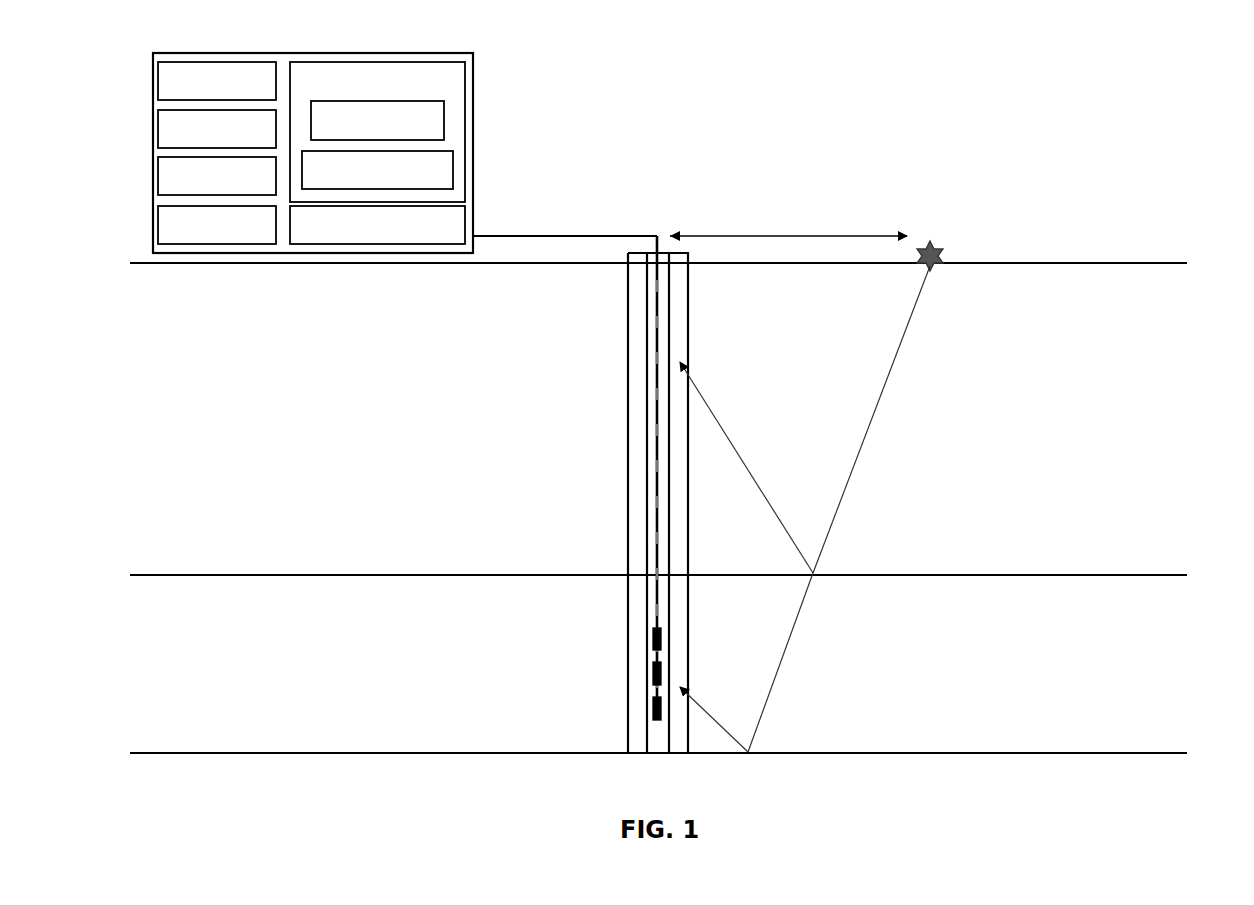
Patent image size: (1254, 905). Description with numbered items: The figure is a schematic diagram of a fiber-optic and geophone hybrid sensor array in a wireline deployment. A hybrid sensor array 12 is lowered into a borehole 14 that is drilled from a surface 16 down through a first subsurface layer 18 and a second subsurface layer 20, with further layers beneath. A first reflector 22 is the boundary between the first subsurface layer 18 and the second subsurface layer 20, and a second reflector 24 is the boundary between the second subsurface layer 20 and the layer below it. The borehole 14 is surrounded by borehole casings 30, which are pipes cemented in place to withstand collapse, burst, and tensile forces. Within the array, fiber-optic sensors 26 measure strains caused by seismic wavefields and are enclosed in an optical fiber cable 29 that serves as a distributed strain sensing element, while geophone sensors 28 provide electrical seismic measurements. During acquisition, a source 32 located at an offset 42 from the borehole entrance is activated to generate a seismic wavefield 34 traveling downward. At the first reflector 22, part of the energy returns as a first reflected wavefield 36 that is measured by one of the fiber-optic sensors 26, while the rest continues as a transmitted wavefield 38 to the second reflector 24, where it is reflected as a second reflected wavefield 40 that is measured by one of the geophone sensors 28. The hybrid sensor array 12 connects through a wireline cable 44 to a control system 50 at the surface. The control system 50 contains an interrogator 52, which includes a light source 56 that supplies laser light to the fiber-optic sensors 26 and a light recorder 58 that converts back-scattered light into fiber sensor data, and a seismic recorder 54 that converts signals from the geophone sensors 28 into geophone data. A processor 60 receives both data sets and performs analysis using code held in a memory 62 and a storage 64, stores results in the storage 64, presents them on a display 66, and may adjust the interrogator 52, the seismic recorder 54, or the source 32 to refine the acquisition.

The hybrid sensor array 12 is at (553, 619).
The borehole 14 is at (650, 335).
The surface 16 is at (1115, 258).
The first subsurface layer 18 is at (1185, 403).
The second subsurface layer 20 is at (1183, 649).
The first reflector 22 is at (1163, 573).
The second reflector 24 is at (1170, 749).
The fiber-optic sensors 26 is at (647, 565).
The geophone sensors 28 is at (645, 700).
The optical fiber cable 29 is at (653, 277).
The borehole casings 30 is at (632, 415).
The source 32 is at (937, 243).
The seismic wavefield 34 is at (888, 380).
The first reflected wavefield 36 is at (730, 433).
The transmitted wavefield 38 is at (785, 672).
The second reflected wavefield 40 is at (707, 707).
The offset 42 is at (792, 235).
The wireline cable 44 is at (542, 233).
The control system 50 is at (260, 50).
The interrogator 52 is at (423, 62).
The seismic recorder 54 is at (465, 220).
The light source 56 is at (447, 123).
The light recorder 58 is at (453, 172).
The processor 60 is at (158, 78).
The memory 62 is at (158, 125).
The storage 64 is at (158, 172).
The display 66 is at (158, 222).